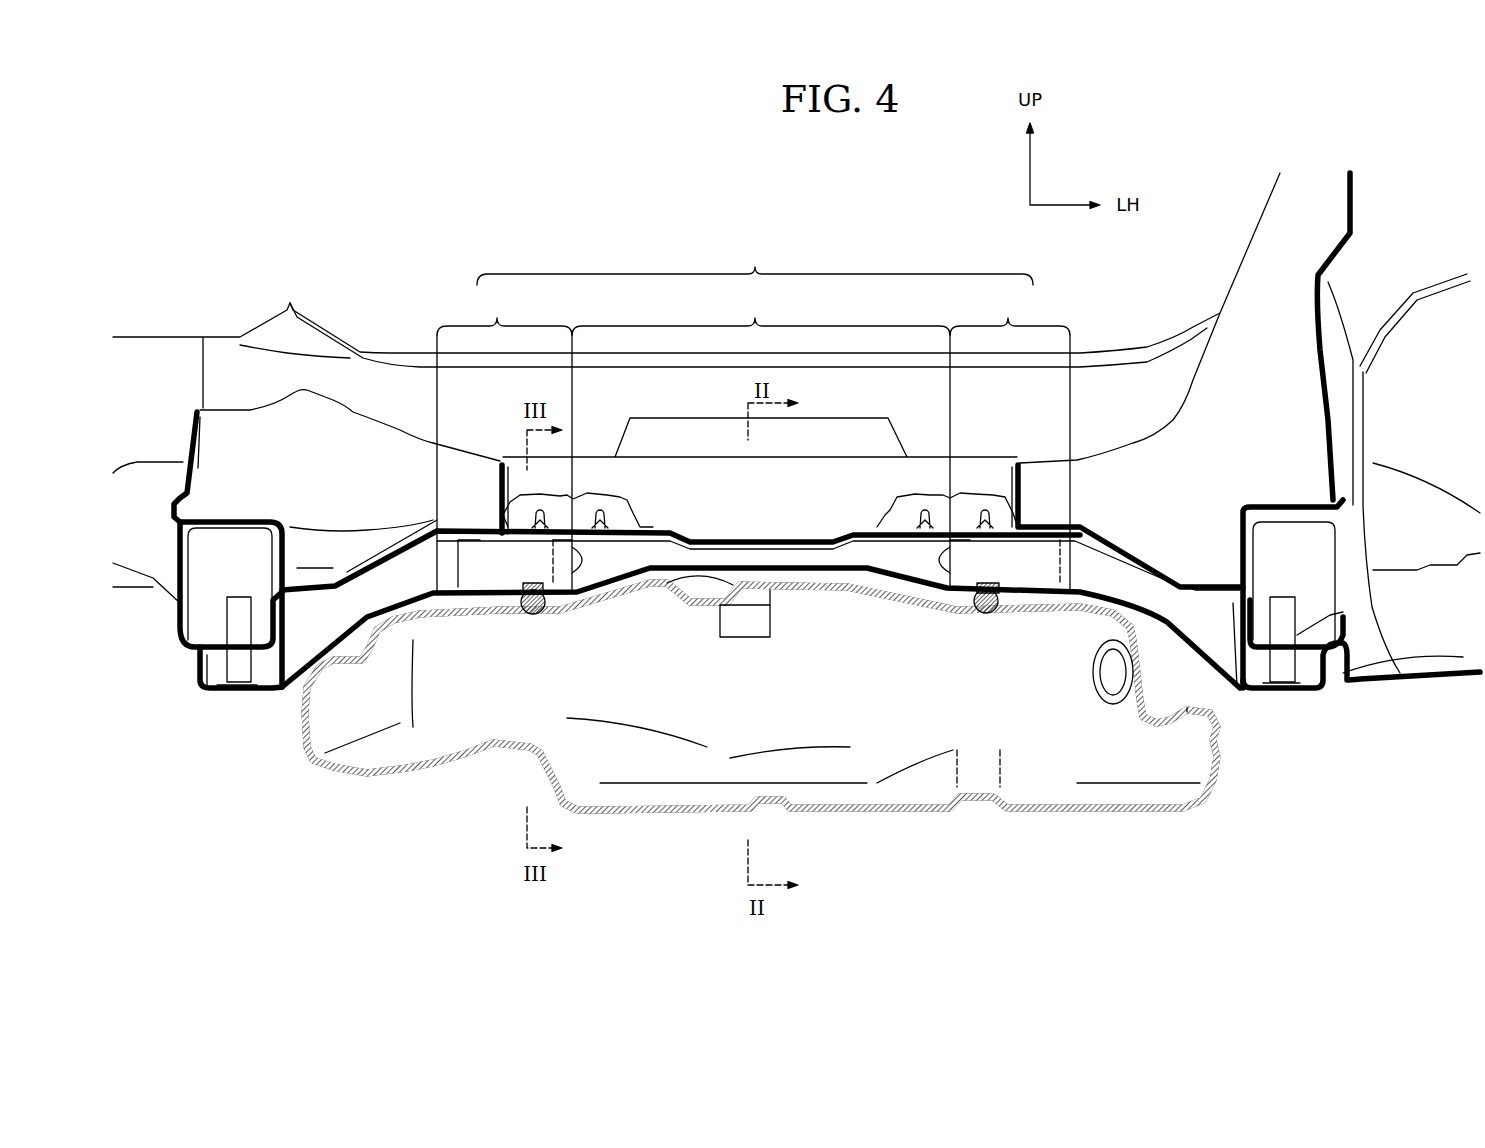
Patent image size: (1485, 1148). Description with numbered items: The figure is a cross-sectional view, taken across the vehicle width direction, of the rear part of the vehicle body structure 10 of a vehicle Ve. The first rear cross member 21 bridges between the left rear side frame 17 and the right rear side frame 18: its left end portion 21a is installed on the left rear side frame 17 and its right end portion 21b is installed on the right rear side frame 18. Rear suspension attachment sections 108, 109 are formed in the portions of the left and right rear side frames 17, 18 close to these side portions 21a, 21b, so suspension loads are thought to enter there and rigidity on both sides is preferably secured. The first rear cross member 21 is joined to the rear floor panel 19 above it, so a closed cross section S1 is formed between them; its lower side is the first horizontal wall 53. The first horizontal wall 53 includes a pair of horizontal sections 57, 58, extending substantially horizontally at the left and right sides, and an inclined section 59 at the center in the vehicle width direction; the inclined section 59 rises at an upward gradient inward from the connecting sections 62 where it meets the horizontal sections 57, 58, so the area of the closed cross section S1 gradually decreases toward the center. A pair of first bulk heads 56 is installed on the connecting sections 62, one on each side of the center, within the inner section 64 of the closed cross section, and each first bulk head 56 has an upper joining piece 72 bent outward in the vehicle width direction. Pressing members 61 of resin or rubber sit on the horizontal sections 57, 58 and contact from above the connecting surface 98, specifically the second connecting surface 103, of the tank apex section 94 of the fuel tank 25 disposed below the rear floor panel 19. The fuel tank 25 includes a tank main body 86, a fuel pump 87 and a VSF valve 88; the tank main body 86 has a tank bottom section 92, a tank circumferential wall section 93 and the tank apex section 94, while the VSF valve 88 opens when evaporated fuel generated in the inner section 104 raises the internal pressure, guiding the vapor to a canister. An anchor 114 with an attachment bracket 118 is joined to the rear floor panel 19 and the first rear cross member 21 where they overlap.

The vehicle Ve is at (393, 190).
The vehicle body structure 10 is at (375, 265).
The left rear side frame 17 is at (1347, 547).
The right rear side frame 18 is at (177, 550).
The rear floor panel 19 is at (712, 535).
The first rear cross member 21 is at (847, 580).
The left end portion 21a is at (1223, 673).
The right end portion 21b is at (284, 693).
The fuel tank 25 is at (1145, 625).
The first horizontal wall 53 is at (755, 260).
The first bulk head 56 is at (568, 563).
The horizontal section 57 is at (1030, 645).
The horizontal section 58 is at (453, 641).
The inclined section 59 is at (680, 641).
The pressing member 61 is at (537, 612).
The connecting section 62 is at (578, 595).
The inner section 64 is at (613, 549).
The upper joining piece 72 is at (563, 548).
The tank main body 86 is at (1133, 820).
The fuel pump 87 is at (456, 777).
The VSF valve 88 is at (757, 620).
The tank bottom section 92 is at (883, 813).
The tank circumferential wall section 93 is at (1218, 765).
The tank apex section 94 is at (1065, 590).
The connecting surface 98 is at (810, 582).
The second connecting surface 103 is at (485, 598).
The inner section 104 is at (706, 713).
The rear suspension attachment section 108 is at (1283, 667).
The rear suspension attachment section 109 is at (230, 667).
The anchor 114 is at (513, 487).
The attachment bracket 118 is at (588, 507).
The closed cross section S1 is at (604, 598).